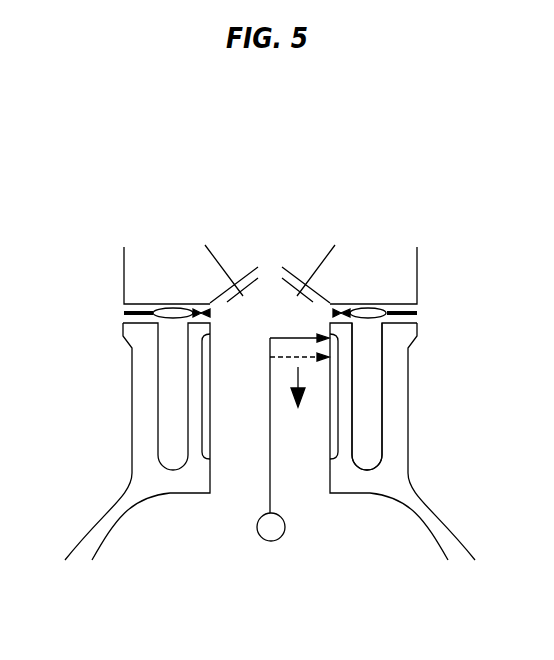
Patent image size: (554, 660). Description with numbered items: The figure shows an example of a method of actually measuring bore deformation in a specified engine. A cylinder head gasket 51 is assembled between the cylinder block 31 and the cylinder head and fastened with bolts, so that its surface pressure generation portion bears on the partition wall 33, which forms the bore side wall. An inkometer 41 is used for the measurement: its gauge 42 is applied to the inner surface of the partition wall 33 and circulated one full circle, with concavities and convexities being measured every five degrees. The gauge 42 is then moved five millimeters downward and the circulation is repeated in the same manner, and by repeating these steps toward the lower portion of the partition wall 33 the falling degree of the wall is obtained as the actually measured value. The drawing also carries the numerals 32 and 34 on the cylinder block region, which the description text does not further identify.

The cylinder head gasket 51 is at (125, 313).
The cylinder block 31 is at (145, 407).
The gap between pistons 32 is at (246, 425).
The partition wall 33 is at (347, 383).
The slot of second piston 34 is at (370, 427).
The gauge 42 is at (310, 335).
The inkometer 41 is at (273, 541).